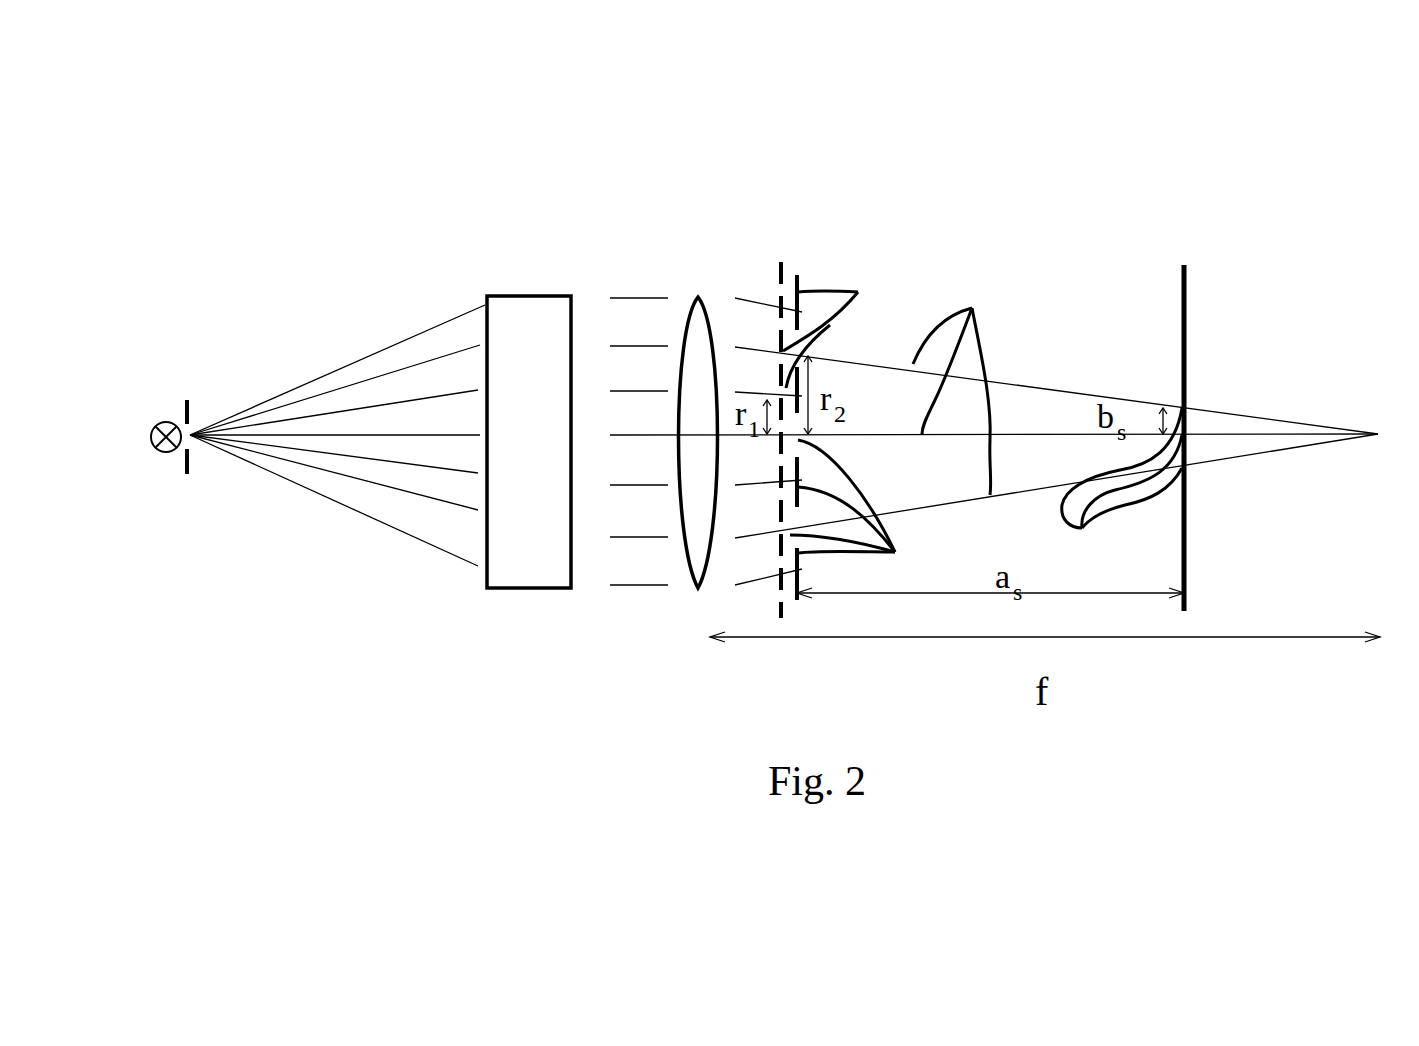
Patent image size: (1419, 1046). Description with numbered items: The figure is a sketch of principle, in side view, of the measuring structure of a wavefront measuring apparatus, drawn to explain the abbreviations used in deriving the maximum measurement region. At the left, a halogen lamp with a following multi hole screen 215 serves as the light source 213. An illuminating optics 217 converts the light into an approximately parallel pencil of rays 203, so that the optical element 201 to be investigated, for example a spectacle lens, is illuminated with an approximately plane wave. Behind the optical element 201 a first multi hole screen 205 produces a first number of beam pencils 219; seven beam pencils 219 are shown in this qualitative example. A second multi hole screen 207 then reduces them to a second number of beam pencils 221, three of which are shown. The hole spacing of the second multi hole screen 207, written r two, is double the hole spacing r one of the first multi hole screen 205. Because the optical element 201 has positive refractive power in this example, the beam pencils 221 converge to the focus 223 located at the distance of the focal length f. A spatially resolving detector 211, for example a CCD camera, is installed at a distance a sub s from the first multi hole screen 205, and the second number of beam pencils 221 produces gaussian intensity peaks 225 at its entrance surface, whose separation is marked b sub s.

The optical element 201 is at (680, 300).
The parallel pencil of rays 203 is at (628, 297).
The first multi hole screen 205 is at (783, 264).
The second multi hole screen 207 is at (798, 275).
The spatially resolving detector 211 is at (1178, 288).
The light source 213 is at (150, 450).
The multi hole screen 215 is at (180, 372).
The illuminating optics 217 is at (485, 300).
The first number of beam pencils 219 is at (871, 424).
The second number of beam pencils 221 is at (974, 392).
The focus 223 is at (1378, 432).
The gaussian intensity peaks 225 is at (1122, 481).